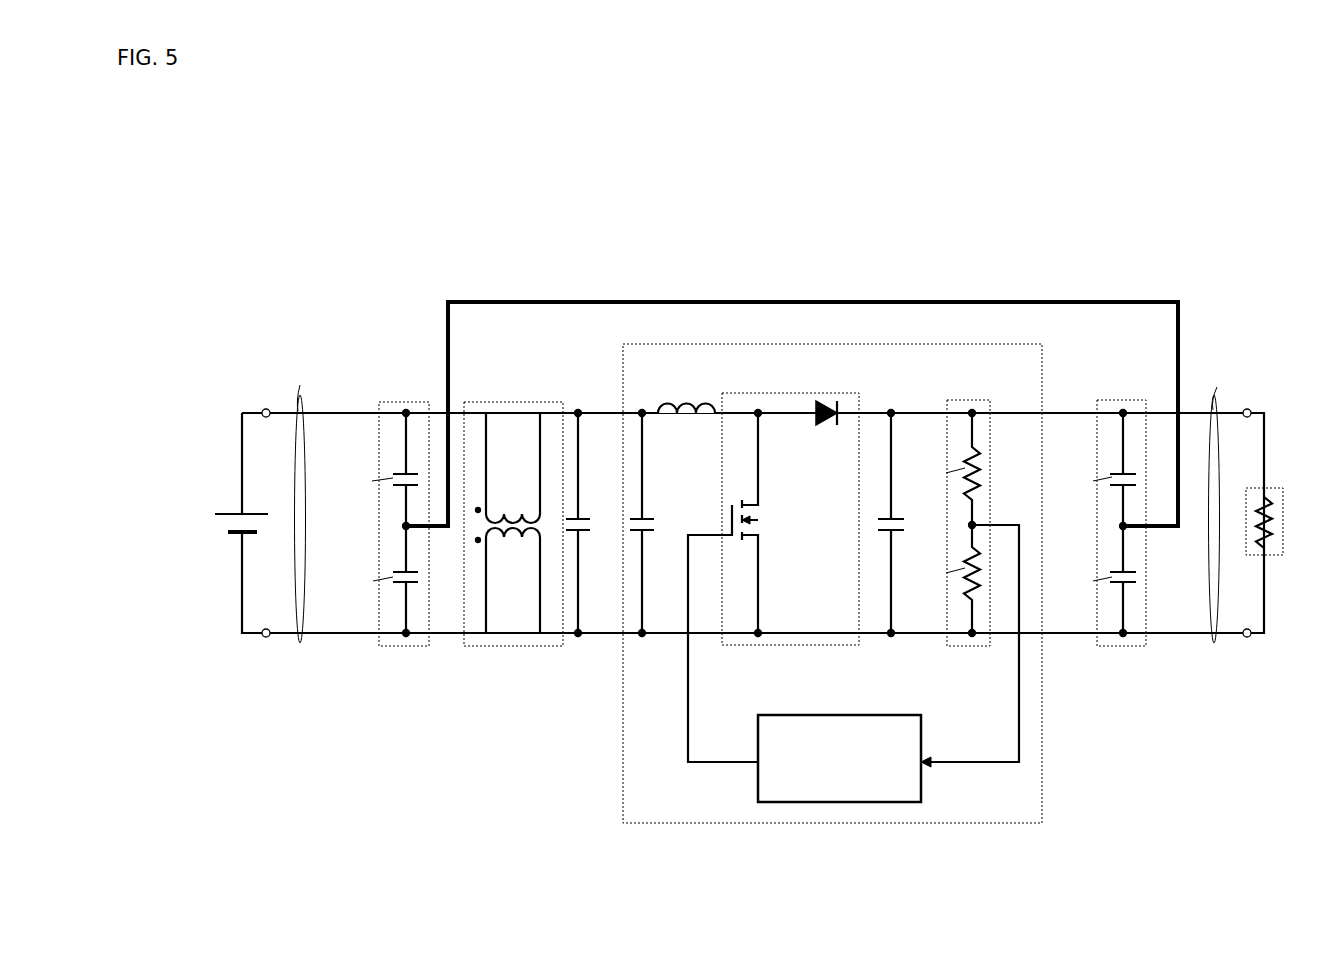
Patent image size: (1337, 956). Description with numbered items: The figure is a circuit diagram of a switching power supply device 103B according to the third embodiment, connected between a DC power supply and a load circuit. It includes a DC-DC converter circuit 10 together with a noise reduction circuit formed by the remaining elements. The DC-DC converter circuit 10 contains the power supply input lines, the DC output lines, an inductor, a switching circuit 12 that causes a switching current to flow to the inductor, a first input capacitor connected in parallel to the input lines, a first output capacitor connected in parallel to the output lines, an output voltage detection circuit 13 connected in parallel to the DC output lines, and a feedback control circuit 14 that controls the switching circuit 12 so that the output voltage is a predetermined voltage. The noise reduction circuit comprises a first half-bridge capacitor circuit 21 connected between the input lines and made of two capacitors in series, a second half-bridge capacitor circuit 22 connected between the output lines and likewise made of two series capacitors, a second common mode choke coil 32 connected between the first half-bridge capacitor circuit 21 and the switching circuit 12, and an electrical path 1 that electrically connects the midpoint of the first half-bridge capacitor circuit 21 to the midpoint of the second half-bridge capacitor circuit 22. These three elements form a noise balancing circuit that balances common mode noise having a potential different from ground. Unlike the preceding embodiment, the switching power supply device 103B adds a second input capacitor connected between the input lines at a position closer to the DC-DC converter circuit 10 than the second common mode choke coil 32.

The switching power supply device 103B is at (322, 188).
The electrical path 1 is at (808, 300).
The DC-DC converter circuit 10 is at (905, 344).
The switching circuit 12 is at (791, 393).
The output voltage detection circuit 13 is at (966, 400).
The feedback control circuit 14 is at (830, 715).
The first half-bridge capacitor circuit 21 is at (406, 402).
The second half-bridge capacitor circuit 22 is at (1121, 400).
The second common mode choke coil 32 is at (510, 402).